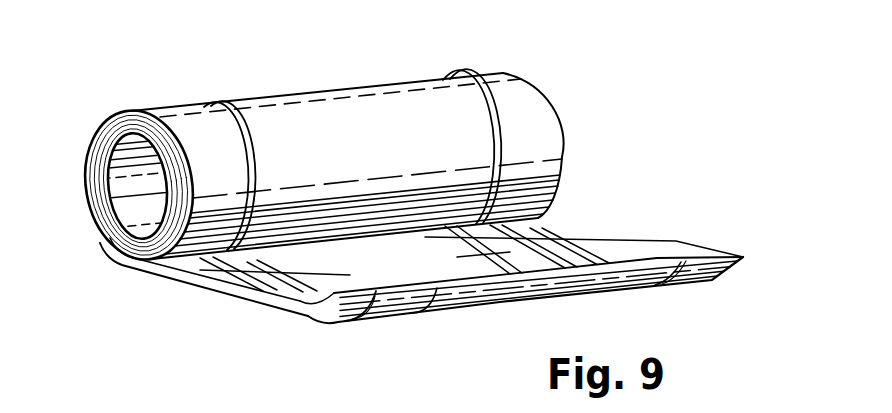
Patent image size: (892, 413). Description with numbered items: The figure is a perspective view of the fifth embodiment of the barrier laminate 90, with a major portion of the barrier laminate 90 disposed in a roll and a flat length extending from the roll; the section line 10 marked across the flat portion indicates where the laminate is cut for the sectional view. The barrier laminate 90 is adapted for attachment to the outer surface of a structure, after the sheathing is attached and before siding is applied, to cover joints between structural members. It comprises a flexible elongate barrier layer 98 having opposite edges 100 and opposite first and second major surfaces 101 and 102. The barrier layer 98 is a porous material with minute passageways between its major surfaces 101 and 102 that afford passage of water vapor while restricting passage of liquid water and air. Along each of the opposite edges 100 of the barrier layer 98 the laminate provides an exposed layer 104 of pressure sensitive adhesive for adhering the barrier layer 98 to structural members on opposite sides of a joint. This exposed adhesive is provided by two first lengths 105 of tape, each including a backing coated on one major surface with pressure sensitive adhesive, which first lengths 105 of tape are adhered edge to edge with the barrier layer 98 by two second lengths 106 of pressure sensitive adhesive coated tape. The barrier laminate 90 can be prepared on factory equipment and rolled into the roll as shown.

The barrier laminate 90 is at (606, 145).
The barrier layer 98 is at (497, 297).
The opposite edges 100 is at (421, 309).
The first major surface 101 is at (303, 312).
The second major surface 102 is at (587, 287).
The exposed layer of pressure sensitive adhesive 104 is at (217, 290).
The first lengths of tape 105 is at (393, 313).
The second lengths of pressure sensitive adhesive coated tape 106 is at (262, 294).
The section line 10- 10 is at (200, 285).